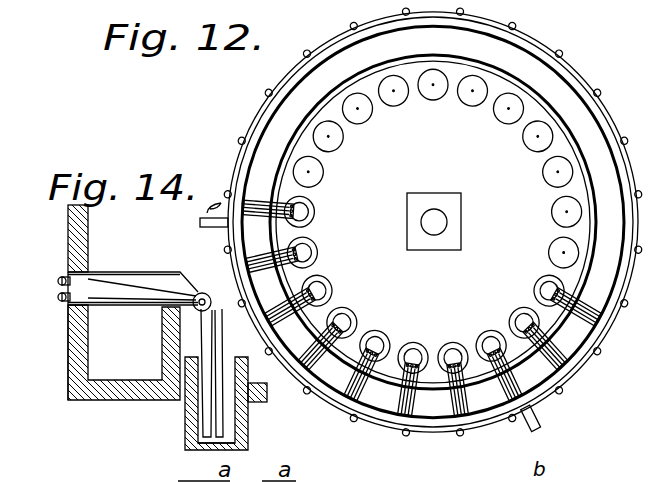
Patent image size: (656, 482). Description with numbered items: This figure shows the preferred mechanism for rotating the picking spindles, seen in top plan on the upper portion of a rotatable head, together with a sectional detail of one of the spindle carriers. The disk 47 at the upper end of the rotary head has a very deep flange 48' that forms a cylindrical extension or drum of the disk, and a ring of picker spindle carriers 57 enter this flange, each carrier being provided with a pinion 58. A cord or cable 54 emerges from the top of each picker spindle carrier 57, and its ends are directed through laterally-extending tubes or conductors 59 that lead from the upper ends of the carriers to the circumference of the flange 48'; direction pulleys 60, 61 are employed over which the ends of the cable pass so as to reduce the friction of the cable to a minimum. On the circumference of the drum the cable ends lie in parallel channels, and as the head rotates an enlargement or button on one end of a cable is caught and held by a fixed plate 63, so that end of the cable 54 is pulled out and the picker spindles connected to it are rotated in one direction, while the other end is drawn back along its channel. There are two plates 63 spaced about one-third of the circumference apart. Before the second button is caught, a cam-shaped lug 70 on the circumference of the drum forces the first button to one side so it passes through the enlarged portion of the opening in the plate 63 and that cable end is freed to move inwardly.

In FIG. 12, the disk 47 is at (433, 222).
In FIG. 14, the disk 47 is at (118, 400).
In FIG. 12, the flange 48' is at (388, 469).
In FIG. 14, the flange 48' is at (97, 352).
In FIG. 14, the cord or cable 54 is at (212, 338).
In FIG. 14, the picker spindle carrier 57 is at (248, 432).
In FIG. 14, the pinion 58 is at (247, 371).
In FIG. 12, the tube or conductor 59 is at (460, 396).
In FIG. 14, the tube or conductor 59 is at (137, 270).
In FIG. 14, the direction pulley 60 is at (196, 317).
In FIG. 14, the direction pulley 61 is at (64, 284).
In FIG. 12, the plate 63 is at (213, 228).
In FIG. 12, the cam-shaped lug 70 is at (587, 470).